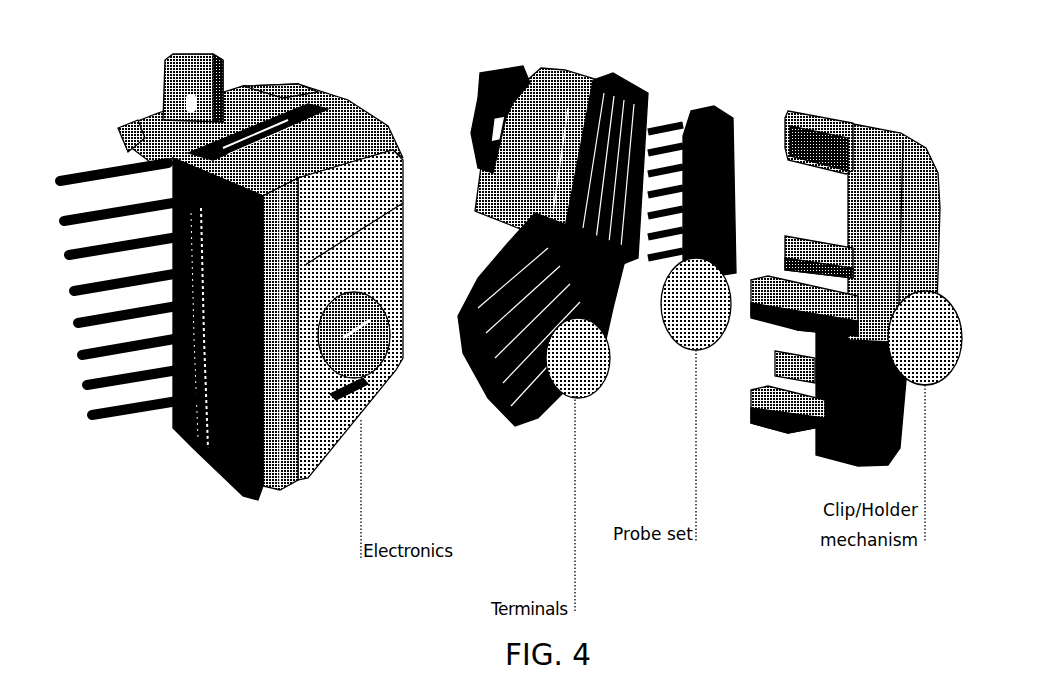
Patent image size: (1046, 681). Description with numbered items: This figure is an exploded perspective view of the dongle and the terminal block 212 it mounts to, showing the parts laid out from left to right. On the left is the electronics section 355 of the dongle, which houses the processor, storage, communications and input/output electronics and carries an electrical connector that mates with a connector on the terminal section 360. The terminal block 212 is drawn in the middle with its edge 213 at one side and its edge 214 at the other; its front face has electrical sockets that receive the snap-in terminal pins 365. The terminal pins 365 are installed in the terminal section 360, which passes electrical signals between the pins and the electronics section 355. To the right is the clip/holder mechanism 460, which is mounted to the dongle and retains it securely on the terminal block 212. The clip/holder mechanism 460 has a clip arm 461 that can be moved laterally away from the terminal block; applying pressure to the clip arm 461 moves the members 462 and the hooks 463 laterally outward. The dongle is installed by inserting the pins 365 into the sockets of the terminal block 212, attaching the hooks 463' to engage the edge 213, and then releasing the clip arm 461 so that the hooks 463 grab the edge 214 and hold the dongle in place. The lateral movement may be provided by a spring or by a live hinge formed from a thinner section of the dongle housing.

The terminal block 212 is at (547, 100).
The edge 213 is at (588, 65).
The edge 214 is at (523, 217).
The electronics section 355 is at (360, 372).
The terminal section 360 is at (708, 108).
The terminal pins 365 is at (657, 112).
The clip/holder mechanism 460 is at (510, 321).
The clip arm 461 is at (265, 483).
The members 462 is at (768, 422).
The hooks 463 is at (438, 262).
The hooks 463' is at (591, 202).